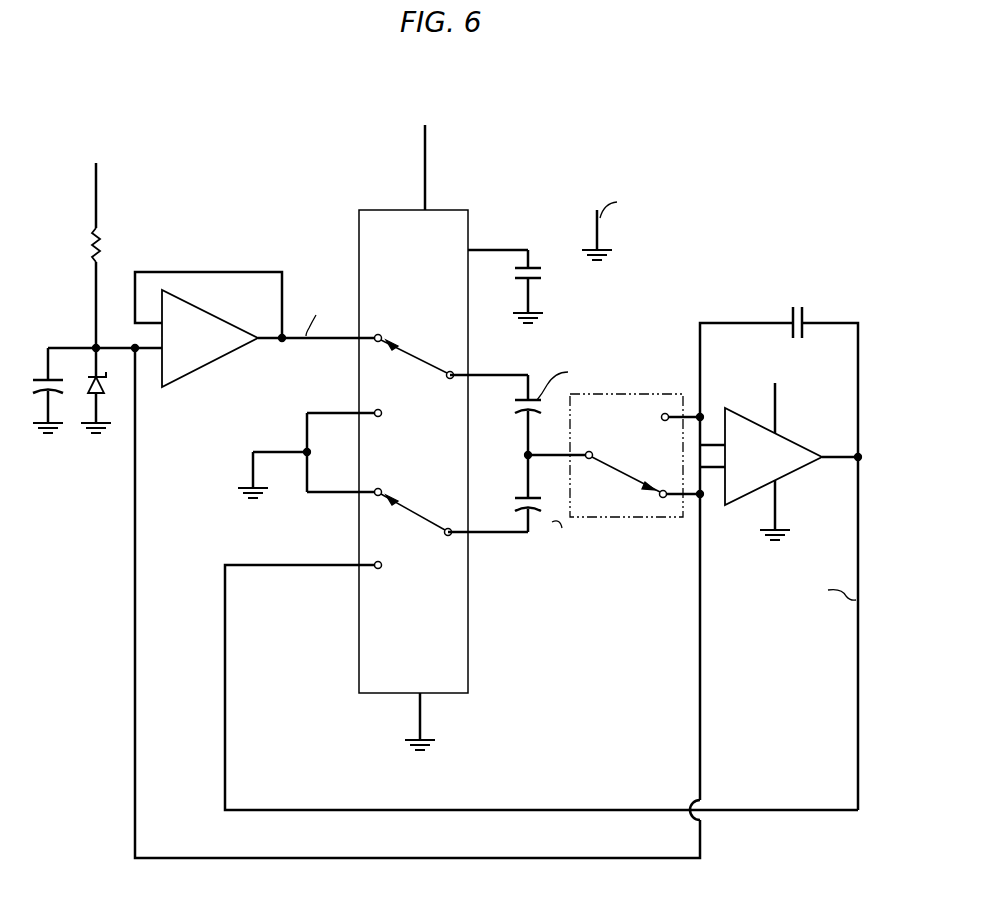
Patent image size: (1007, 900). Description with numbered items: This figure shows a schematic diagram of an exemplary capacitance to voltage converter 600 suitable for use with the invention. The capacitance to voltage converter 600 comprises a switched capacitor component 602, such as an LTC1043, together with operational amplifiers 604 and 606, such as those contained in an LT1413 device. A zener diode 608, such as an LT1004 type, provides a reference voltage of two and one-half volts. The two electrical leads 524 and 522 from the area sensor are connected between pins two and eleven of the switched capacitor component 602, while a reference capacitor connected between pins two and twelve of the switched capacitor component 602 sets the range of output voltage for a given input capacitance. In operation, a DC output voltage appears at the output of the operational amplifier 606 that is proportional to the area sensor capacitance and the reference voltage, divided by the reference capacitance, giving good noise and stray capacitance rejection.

The capacitance to voltage converter 600 is at (703, 129).
The switched capacitor component 602 is at (645, 394).
The operational amplifier 604 is at (214, 316).
The operational amplifier 606 is at (727, 504).
The zener diode 608 is at (103, 385).
The electrical lead 522 is at (528, 454).
The electrical lead 524 is at (530, 373).